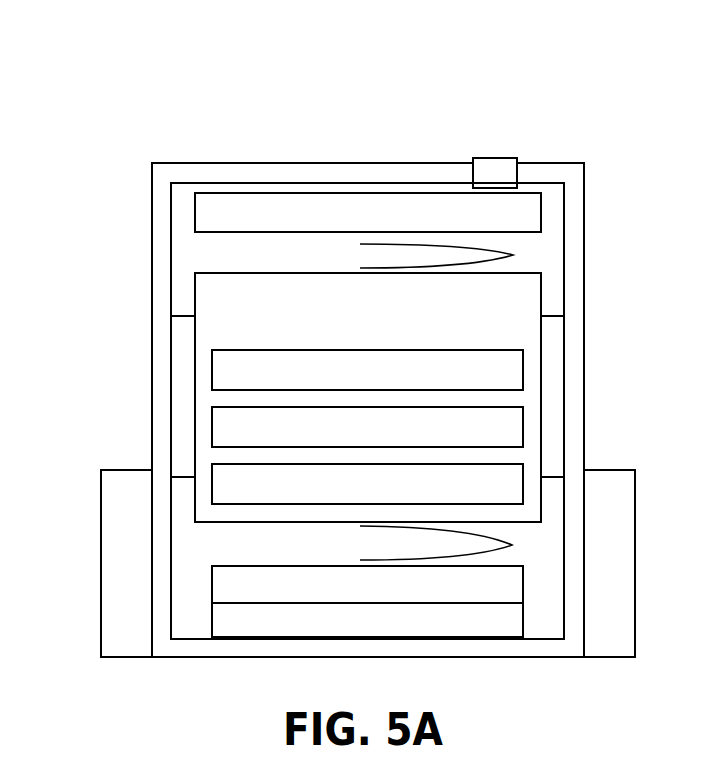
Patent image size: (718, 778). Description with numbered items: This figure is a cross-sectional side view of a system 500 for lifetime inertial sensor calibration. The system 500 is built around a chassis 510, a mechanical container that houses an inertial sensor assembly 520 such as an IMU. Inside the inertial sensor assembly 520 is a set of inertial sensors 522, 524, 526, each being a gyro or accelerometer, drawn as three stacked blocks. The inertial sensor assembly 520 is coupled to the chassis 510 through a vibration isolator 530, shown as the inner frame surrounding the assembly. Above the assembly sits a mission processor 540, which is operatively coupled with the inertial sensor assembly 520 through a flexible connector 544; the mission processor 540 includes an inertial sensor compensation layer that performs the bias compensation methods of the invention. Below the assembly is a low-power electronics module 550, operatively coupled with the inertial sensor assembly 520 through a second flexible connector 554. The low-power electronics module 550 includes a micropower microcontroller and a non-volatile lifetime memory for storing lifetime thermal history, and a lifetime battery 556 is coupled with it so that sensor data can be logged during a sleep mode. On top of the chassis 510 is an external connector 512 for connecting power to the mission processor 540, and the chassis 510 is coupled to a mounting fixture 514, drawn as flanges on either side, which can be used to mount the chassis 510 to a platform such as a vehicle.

The system for lifetime inertial sensor calibration 500 is at (250, 78).
The chassis 510 is at (216, 163).
The external connector 512 is at (495, 158).
The mounting fixture 514 is at (108, 573).
The inertial sensor assembly 520 is at (351, 331).
The inertial sensor 522 is at (441, 350).
The inertial sensor 524 is at (500, 407).
The inertial sensor 526 is at (267, 504).
The vibration isolator 530 is at (170, 384).
The mission processor 540 is at (195, 221).
The flexible connector 544 is at (513, 255).
The low-power electronics module 550 is at (523, 585).
The flexible connector 554 is at (512, 545).
The lifetime battery 556 is at (211, 622).